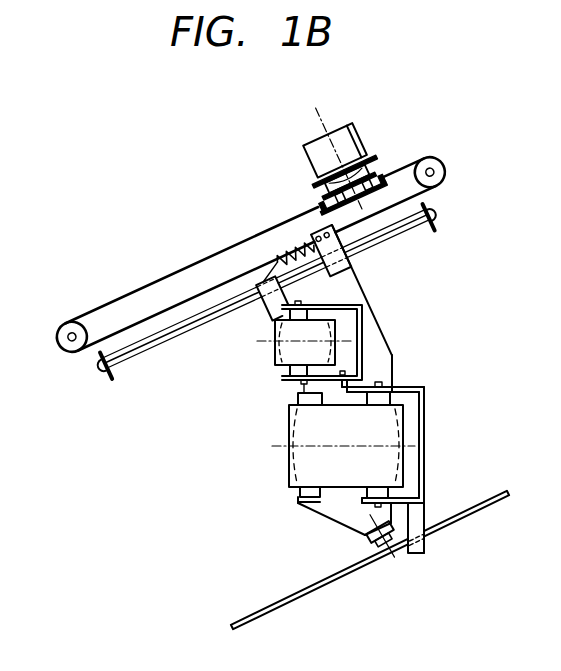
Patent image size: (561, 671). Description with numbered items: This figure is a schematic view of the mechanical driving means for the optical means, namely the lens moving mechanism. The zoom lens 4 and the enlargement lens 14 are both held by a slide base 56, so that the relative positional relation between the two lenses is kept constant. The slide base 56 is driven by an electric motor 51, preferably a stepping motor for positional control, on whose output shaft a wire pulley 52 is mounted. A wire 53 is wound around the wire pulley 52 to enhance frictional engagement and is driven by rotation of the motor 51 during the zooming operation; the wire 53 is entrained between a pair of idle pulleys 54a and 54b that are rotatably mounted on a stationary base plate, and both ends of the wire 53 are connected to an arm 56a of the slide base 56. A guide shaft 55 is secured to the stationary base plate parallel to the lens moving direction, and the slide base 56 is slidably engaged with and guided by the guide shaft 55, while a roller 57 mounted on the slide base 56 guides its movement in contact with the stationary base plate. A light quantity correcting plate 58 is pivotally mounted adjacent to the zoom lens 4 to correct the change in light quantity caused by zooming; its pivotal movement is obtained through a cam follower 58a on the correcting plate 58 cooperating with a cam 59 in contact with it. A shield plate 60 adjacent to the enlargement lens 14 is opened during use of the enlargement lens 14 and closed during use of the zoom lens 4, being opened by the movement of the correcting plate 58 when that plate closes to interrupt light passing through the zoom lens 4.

The zoom lens 4 is at (289, 468).
The enlargement lens 14 is at (275, 360).
The electric motor 51 is at (354, 131).
The wire pulley 52 is at (380, 166).
The wire 53 is at (197, 258).
The idle pulley 54a is at (72, 322).
The idle pulley 54b is at (445, 172).
The guide shaft 55 is at (428, 228).
The slide base 56 is at (362, 288).
The arm 56a is at (348, 247).
The roller 57 is at (362, 537).
The light quantity correcting plate 58 is at (425, 405).
The cam follower 58a is at (424, 542).
The cam 59 is at (315, 590).
The shield plate 60 is at (363, 355).